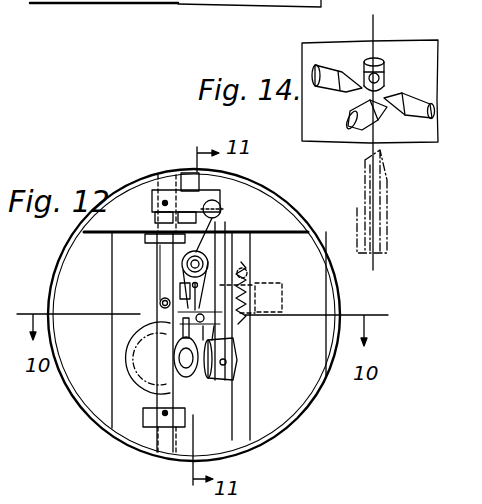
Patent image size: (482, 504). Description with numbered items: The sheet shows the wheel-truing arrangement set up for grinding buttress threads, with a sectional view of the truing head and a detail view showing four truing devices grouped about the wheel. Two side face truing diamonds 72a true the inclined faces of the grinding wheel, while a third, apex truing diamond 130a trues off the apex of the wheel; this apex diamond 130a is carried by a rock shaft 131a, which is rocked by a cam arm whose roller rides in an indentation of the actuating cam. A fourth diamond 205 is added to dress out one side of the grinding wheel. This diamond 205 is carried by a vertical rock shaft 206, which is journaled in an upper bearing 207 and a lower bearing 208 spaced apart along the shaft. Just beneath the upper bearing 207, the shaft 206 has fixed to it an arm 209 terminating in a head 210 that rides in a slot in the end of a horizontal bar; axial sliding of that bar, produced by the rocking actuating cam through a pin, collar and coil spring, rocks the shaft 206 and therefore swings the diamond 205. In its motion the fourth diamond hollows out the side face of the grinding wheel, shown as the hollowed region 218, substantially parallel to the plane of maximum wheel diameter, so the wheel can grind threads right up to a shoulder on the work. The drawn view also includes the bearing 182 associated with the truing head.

In FIG. 12, the side face truing diamond 72a is at (196, 322).
In FIG. 14, the side face truing diamond 72a is at (390, 98).
In FIG. 12, the apex truing diamond 130a is at (200, 318).
In FIG. 14, the apex truing diamond 130a is at (386, 66).
In FIG. 12, the rock shaft 131a is at (240, 204).
In FIG. 12, the bearing 182 is at (243, 270).
In FIG. 12, the fourth diamond 205 is at (196, 318).
In FIG. 14, the fourth diamond 205 is at (362, 58).
In FIG. 12, the vertical rock shaft 206 is at (162, 260).
In FIG. 12, the upper bearing 207 is at (168, 186).
In FIG. 12, the lower bearing 208 is at (146, 430).
In FIG. 12, the arm 209 is at (189, 173).
In FIG. 12, the head 210 is at (222, 206).
In FIG. 14, the hollowed-out side face 218 is at (363, 197).